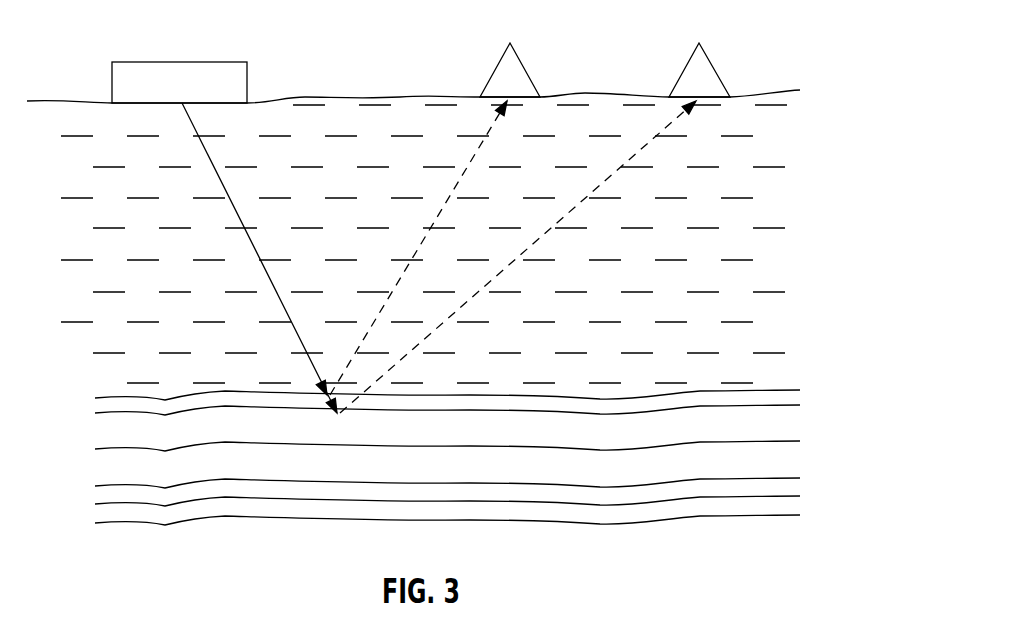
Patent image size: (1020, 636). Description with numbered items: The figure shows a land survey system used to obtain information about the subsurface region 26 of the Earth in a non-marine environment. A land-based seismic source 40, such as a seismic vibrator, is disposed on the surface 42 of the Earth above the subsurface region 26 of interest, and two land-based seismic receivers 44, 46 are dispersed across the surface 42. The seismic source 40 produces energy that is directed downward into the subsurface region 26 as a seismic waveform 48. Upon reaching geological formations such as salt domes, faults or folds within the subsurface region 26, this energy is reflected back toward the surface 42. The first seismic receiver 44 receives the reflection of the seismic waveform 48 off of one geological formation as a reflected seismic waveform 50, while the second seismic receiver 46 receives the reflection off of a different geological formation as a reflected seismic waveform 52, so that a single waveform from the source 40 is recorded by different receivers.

The subsurface region 26 is at (80, 365).
The seismic source 40 is at (158, 62).
The surface 42 is at (353, 96).
The first seismic receiver 44 is at (525, 69).
The second seismic receiver 46 is at (714, 69).
The seismic waveform 48 is at (246, 233).
The reflected seismic waveform 50 is at (432, 222).
The reflected seismic waveform 52 is at (554, 222).